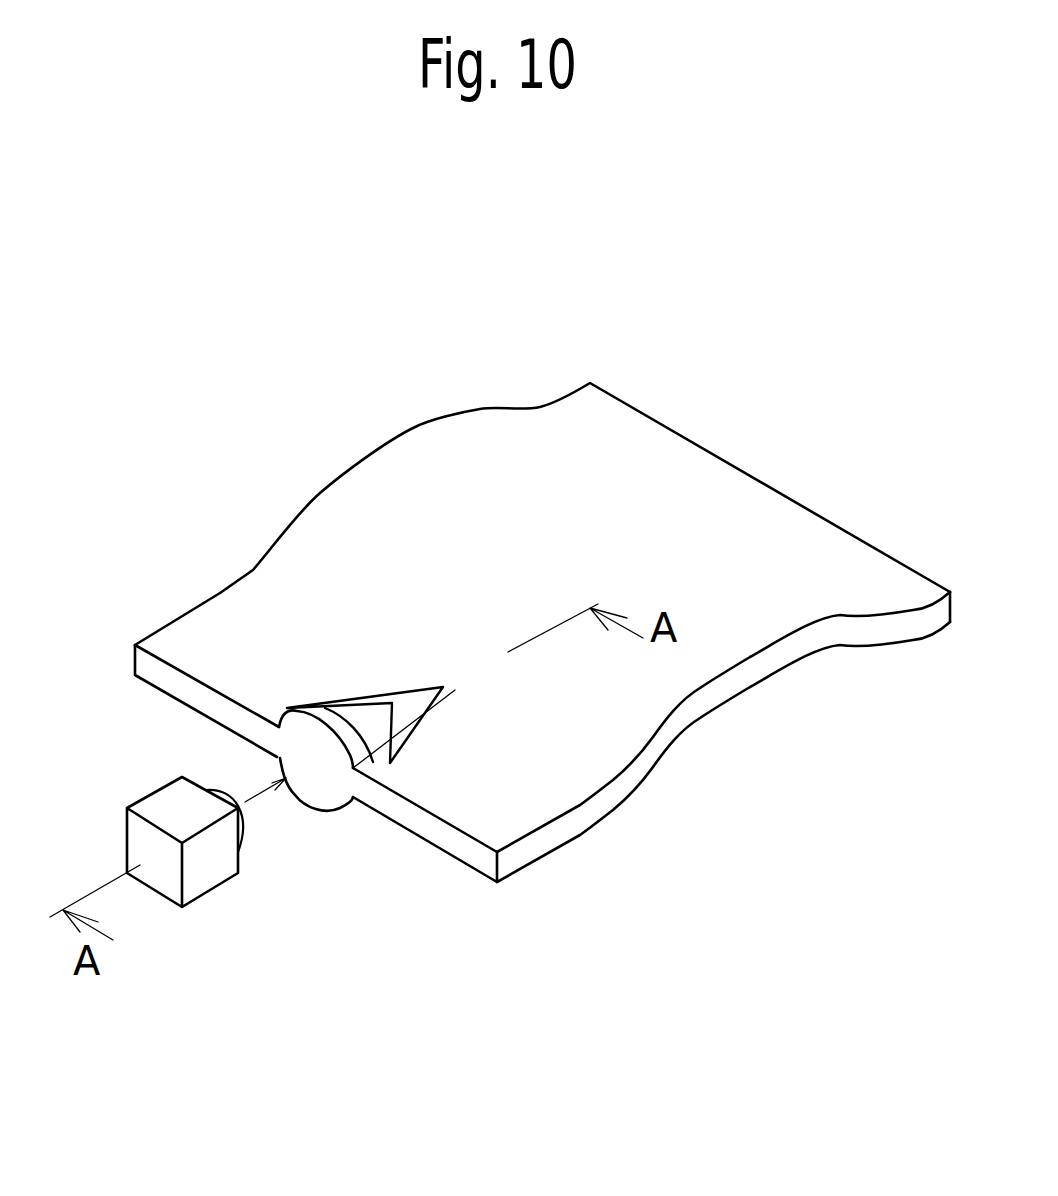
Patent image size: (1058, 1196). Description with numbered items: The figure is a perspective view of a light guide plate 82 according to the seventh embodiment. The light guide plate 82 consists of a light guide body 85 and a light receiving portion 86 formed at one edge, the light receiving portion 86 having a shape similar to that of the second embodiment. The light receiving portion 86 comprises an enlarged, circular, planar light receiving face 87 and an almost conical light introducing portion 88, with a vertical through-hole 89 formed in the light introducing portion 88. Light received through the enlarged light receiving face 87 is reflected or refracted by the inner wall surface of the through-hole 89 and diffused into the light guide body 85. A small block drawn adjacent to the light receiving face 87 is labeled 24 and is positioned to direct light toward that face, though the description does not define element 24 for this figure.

The light guide plate 82 is at (542, 676).
The light guide body 85 is at (607, 427).
The light receiving portion 86 is at (380, 883).
The light receiving face 87 is at (327, 802).
The light introducing portion 88 is at (418, 697).
The through-hole 89 is at (363, 713).
The light emitting element 24 is at (212, 882).